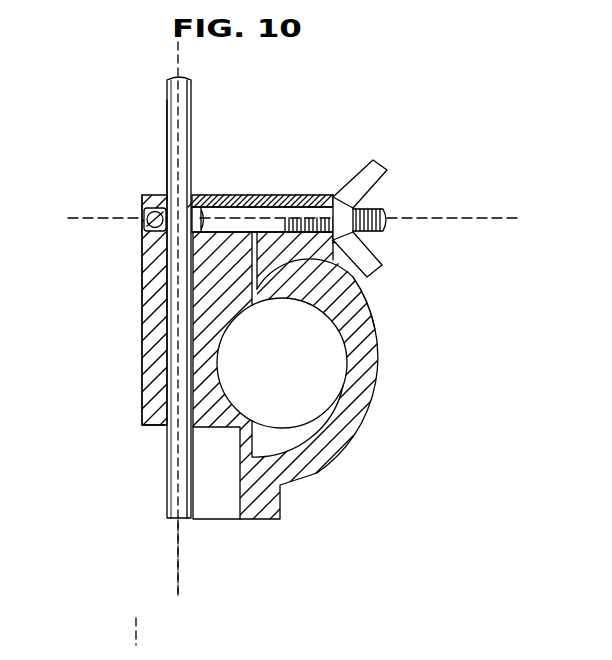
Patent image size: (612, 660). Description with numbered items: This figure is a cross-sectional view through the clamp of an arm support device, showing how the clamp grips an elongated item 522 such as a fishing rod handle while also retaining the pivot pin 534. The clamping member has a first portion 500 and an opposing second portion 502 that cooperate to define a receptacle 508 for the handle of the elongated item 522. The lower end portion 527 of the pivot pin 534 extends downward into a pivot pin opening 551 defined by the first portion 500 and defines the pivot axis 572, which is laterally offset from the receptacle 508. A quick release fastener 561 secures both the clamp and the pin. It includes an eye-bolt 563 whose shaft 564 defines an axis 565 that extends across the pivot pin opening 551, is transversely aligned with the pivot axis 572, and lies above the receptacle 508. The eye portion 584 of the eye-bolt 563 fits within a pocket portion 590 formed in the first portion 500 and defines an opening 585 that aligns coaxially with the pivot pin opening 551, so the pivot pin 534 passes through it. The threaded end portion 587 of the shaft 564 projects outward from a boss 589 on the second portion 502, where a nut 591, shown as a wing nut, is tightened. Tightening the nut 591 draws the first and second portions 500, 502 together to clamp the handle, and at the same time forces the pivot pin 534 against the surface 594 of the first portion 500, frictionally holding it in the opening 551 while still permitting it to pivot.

The first portion 500 is at (140, 412).
The second portion 502 is at (376, 421).
The receptacle 508 is at (316, 430).
The elongated item 522 is at (372, 297).
The lower end portion 527 is at (165, 147).
The pivot pin 534 is at (160, 99).
The pivot pin opening 551 is at (170, 348).
The quick release fastener 561 is at (396, 193).
The eye-bolt 563 is at (295, 195).
The shaft 564 is at (263, 195).
The axis 565 is at (475, 218).
The pivot axis 572 is at (179, 566).
The eye portion 584 is at (142, 214).
The opening 585 is at (200, 195).
The threaded end portion 587 is at (383, 232).
The boss 589 is at (323, 195).
The pocket portion 590 is at (140, 231).
The nut 591 is at (377, 162).
The surface 594 is at (188, 290).